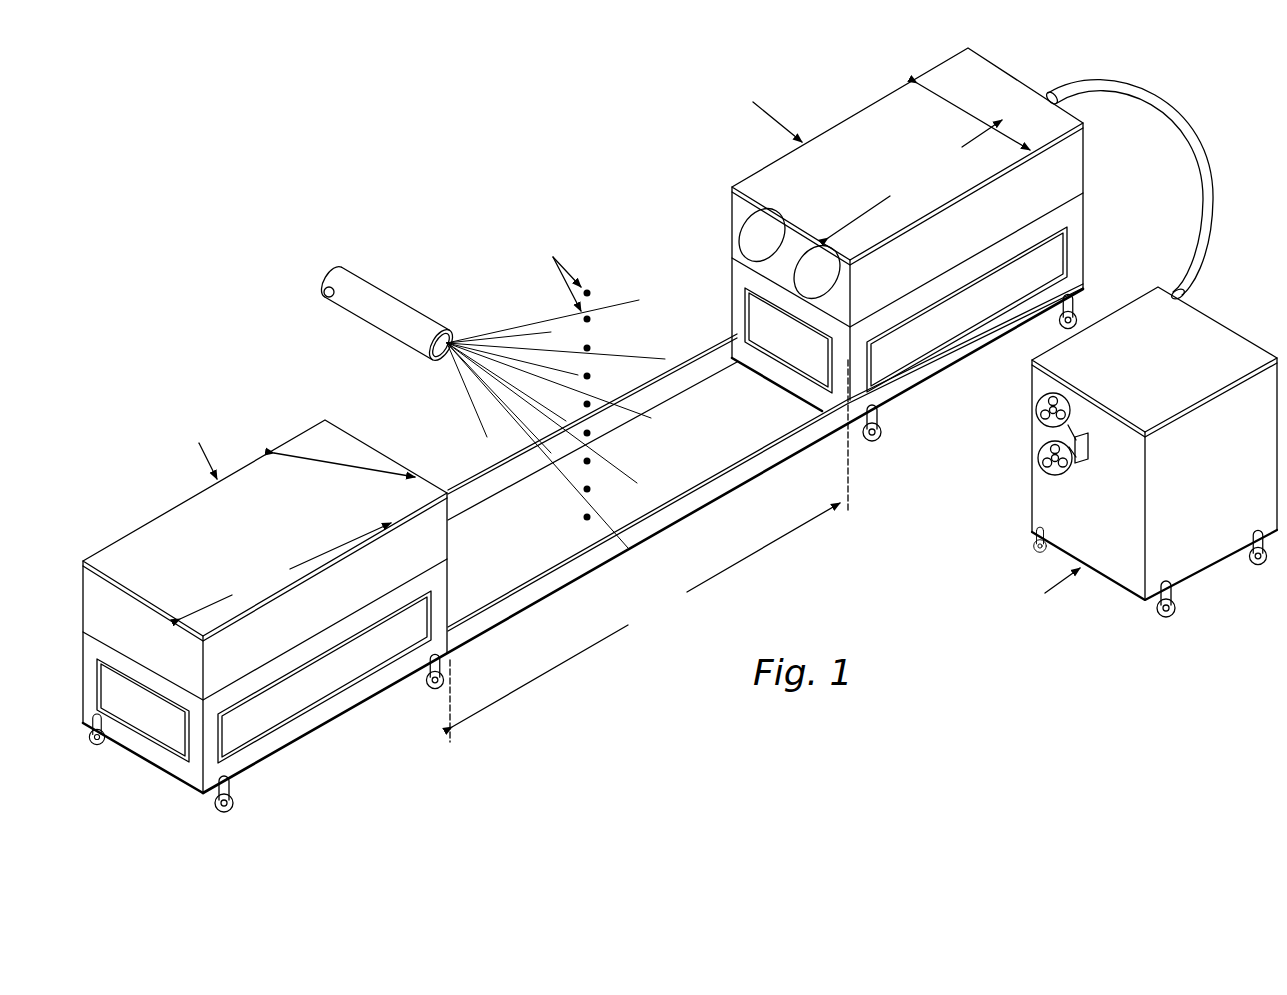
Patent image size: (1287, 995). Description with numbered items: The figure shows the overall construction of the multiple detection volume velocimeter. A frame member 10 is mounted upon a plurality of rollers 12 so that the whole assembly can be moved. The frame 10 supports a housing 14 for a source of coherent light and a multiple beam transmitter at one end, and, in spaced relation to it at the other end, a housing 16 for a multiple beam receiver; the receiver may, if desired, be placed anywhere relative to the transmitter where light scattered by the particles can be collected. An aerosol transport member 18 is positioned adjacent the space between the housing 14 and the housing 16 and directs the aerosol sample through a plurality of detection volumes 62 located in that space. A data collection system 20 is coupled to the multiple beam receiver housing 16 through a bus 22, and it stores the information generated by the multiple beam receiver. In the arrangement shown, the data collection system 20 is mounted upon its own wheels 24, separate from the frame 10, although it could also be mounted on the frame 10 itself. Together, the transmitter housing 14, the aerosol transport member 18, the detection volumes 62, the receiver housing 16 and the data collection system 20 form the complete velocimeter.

The frame member 10 is at (293, 744).
The rollers 12 is at (238, 803).
The housing for a source of coherent light and a multiple beam transmitter 14 is at (164, 512).
The housing for a multiple beam receiver 16 is at (930, 67).
The aerosol transport member 18 is at (420, 317).
The data collection system 20 is at (1078, 467).
The bus 22 is at (1208, 233).
The wheels 24 is at (1035, 543).
The detection volumes 62 is at (534, 368).